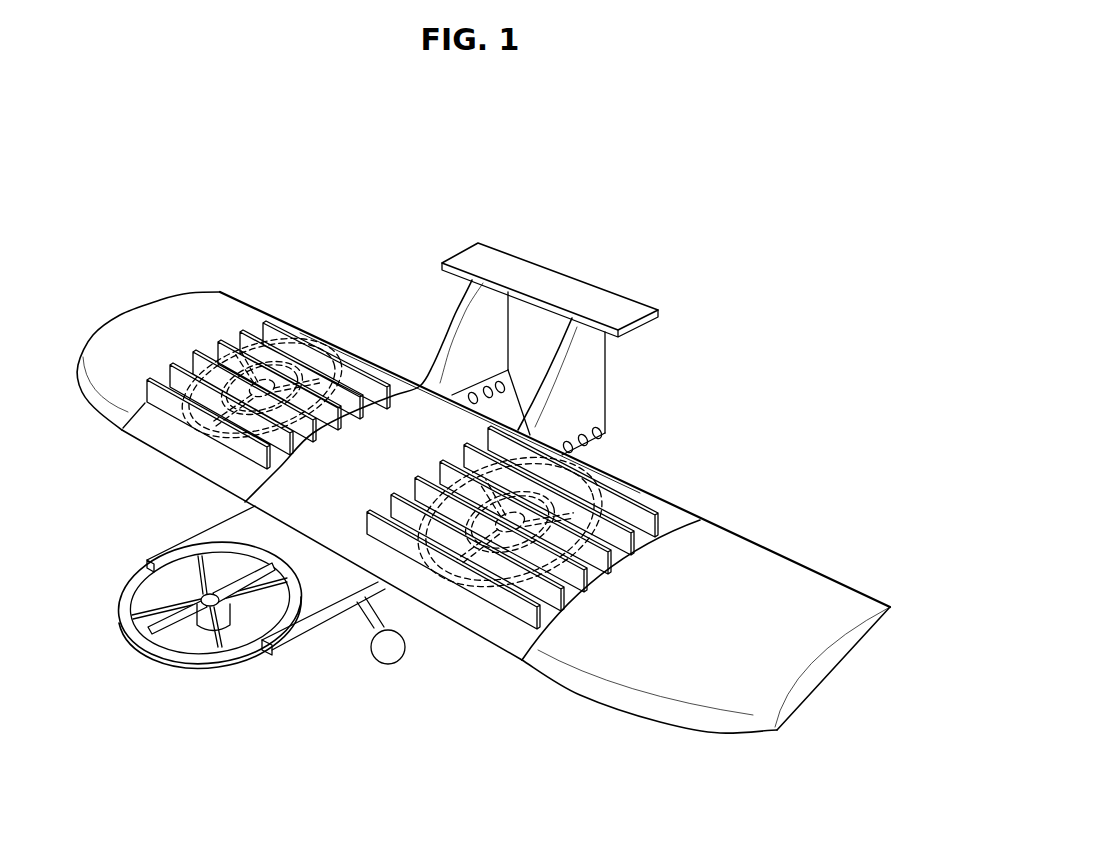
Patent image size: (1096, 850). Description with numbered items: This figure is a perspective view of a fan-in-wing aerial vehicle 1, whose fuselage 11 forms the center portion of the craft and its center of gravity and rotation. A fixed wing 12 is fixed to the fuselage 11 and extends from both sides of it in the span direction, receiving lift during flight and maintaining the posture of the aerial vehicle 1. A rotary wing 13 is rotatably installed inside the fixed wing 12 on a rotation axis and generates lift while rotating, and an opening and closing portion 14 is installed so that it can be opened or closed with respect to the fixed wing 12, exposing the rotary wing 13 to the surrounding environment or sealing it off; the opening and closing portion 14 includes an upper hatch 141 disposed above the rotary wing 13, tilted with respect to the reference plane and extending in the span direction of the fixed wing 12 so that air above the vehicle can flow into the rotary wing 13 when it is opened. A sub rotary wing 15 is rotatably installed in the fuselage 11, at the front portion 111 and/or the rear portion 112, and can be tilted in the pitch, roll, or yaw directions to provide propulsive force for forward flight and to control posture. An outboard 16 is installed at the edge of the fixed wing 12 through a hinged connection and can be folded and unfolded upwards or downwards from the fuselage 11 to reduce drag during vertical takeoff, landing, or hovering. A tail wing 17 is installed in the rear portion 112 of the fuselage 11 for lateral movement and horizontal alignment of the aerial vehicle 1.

The aerial vehicle 1 is at (397, 112).
The fuselage 11 is at (340, 520).
The front portion 111 is at (263, 511).
The rear portion 112 is at (495, 416).
The fixed wing 12 is at (383, 367).
The rotary wing 13 is at (205, 360).
The opening and closing portion 14 is at (452, 402).
The upper hatch 141 is at (365, 392).
The sub rotary wing 15 is at (150, 682).
The outboard 16 is at (140, 323).
The tail wing 17 is at (553, 285).